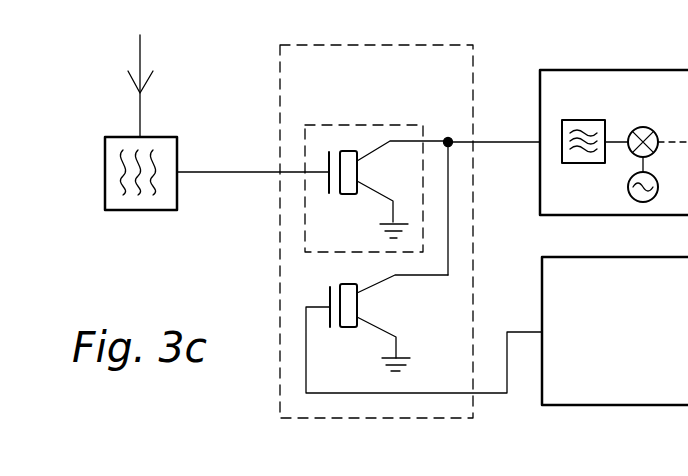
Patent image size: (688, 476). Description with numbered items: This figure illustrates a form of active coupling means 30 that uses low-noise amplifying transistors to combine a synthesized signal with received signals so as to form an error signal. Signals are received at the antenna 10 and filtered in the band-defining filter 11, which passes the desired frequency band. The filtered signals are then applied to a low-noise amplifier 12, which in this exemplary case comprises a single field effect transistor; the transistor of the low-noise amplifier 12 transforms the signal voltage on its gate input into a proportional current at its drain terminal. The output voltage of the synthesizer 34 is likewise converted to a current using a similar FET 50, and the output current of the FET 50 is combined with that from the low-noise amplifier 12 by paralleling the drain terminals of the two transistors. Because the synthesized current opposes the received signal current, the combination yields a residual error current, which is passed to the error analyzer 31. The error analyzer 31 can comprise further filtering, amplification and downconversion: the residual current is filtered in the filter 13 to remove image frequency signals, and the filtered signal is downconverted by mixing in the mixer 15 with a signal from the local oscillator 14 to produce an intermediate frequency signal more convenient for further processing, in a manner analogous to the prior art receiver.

The antenna 10 is at (141, 48).
The band-defining filter 11 is at (140, 210).
The active coupling means 30 is at (390, 45).
The low-noise amplifier 12 is at (311, 252).
The FET 50 is at (358, 305).
The error analyzer 31 is at (540, 176).
The filter 13 is at (583, 163).
The mixer 15 is at (642, 127).
The local oscillator 14 is at (657, 180).
The synthesizer 34 is at (541, 296).